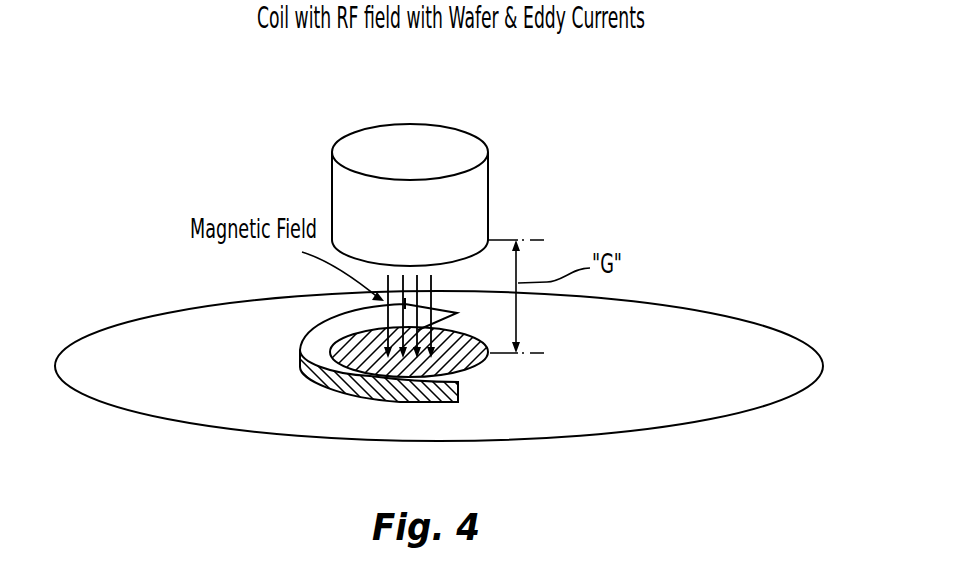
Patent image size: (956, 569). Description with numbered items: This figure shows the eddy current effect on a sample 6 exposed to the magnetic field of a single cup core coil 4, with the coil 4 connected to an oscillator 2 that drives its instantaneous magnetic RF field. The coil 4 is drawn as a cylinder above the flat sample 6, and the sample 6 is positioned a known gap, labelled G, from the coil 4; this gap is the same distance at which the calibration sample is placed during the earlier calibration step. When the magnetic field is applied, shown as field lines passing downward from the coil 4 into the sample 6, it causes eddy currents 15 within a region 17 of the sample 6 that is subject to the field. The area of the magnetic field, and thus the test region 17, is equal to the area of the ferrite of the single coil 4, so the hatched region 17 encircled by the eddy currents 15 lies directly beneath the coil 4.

The oscillator 2 is at (430, 140).
The coil 4 is at (422, 236).
The sample 6 is at (733, 333).
The eddy currents 15 is at (300, 362).
The region 17 is at (481, 362).